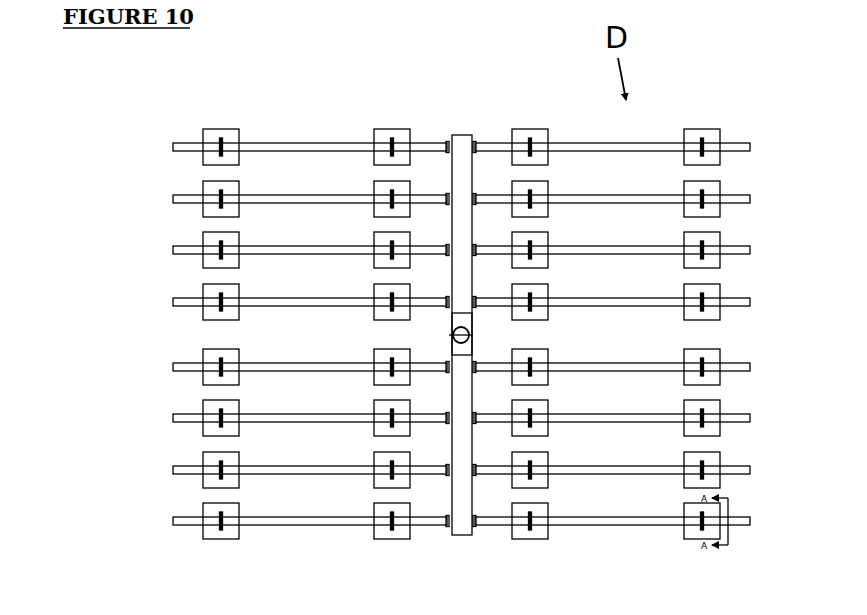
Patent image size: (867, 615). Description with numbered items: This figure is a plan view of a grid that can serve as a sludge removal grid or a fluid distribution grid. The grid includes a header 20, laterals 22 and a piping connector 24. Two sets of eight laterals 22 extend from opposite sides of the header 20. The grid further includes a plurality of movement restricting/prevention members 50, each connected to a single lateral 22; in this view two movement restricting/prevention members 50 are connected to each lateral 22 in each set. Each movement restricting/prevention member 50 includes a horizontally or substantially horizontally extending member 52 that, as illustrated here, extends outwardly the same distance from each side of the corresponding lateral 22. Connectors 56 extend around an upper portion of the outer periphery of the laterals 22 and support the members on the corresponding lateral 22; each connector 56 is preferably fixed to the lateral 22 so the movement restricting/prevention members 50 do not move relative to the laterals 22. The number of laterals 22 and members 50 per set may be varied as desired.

The header 20 is at (462, 537).
The lateral 22 is at (621, 526).
The piping connector 24 is at (470, 334).
The movement restricting/prevention member 50 is at (471, 326).
The horizontally extending member 52 is at (537, 540).
The connector 56 is at (218, 320).